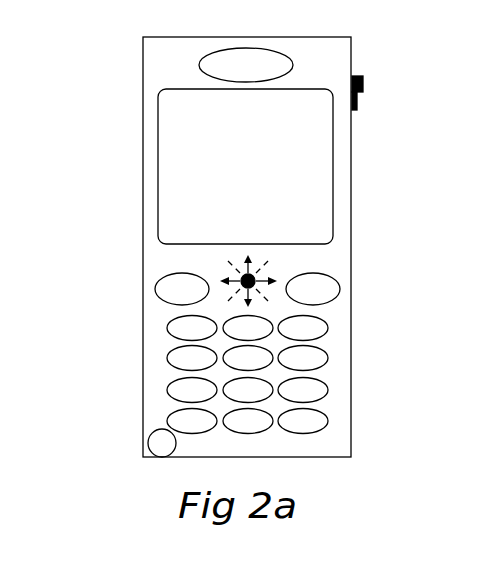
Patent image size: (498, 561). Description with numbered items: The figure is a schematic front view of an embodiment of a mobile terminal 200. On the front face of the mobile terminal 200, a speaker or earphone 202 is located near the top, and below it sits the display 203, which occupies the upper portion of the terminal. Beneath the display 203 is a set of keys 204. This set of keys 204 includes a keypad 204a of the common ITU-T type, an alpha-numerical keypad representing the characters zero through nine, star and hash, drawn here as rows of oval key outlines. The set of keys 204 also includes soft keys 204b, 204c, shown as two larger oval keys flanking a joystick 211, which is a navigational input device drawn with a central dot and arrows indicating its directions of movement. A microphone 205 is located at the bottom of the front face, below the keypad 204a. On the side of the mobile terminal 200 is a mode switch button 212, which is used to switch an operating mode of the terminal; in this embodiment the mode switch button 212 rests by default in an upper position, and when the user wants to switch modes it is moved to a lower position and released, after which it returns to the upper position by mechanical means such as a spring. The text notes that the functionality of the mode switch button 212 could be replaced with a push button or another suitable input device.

The mobile terminal 200 is at (104, 43).
The speaker 202 is at (237, 58).
The display 203 is at (170, 154).
The set of keys 204 is at (253, 372).
The keypad 204a is at (322, 355).
The soft key 204b is at (170, 290).
The soft key 204c is at (320, 292).
The microphone 205 is at (158, 440).
The joystick 211 is at (245, 279).
The mode switch button 212 is at (365, 78).